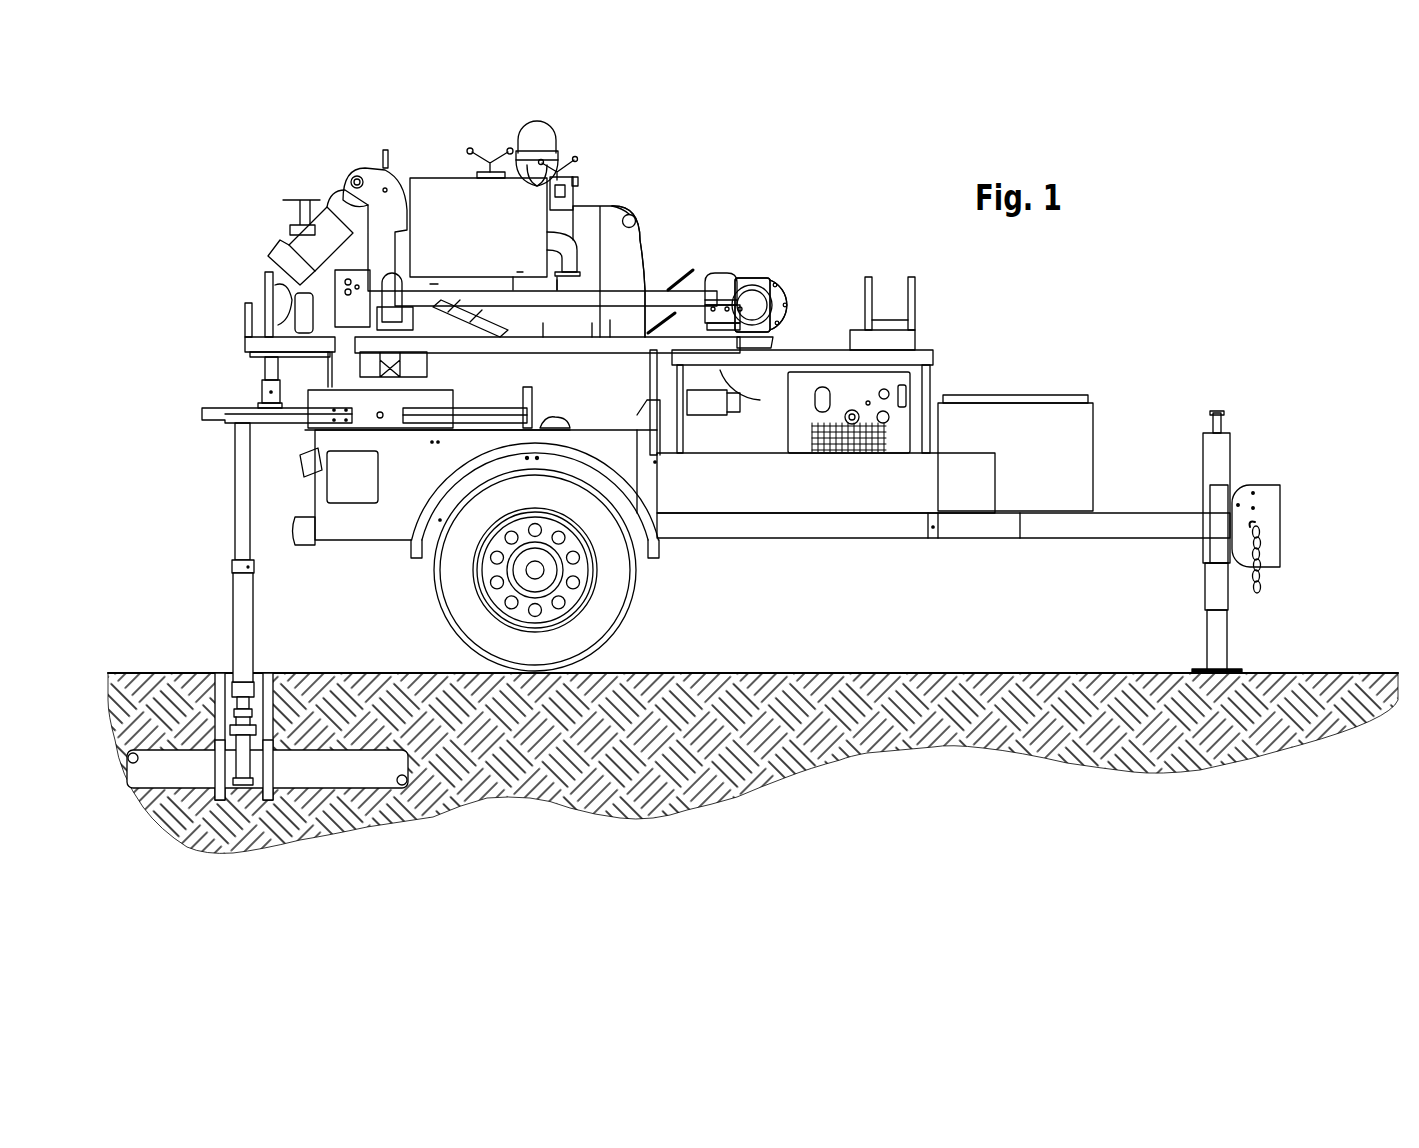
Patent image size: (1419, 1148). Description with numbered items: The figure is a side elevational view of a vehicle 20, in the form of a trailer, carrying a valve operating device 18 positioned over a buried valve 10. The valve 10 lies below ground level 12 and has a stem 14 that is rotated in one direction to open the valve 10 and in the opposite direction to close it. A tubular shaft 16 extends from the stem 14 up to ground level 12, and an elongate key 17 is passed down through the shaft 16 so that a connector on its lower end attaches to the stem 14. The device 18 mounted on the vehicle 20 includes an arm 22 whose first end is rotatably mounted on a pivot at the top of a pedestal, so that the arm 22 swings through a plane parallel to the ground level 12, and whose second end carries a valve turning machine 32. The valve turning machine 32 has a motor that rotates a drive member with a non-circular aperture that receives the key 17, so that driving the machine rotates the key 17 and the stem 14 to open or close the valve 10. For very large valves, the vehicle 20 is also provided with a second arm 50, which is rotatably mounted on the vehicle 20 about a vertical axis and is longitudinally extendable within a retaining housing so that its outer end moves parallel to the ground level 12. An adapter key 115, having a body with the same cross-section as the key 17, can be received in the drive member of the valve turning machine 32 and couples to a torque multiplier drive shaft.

The valve 10 is at (245, 790).
The ground level 12 is at (130, 676).
The stem 14 is at (232, 706).
The tubular shaft 16 is at (262, 683).
The elongate key 17 is at (233, 577).
The device 18 is at (237, 232).
The vehicle 20 is at (813, 546).
The arm 22 is at (655, 282).
The valve turning machine 32 is at (245, 343).
The second arm 50 is at (205, 412).
The adapter key 115 is at (262, 365).